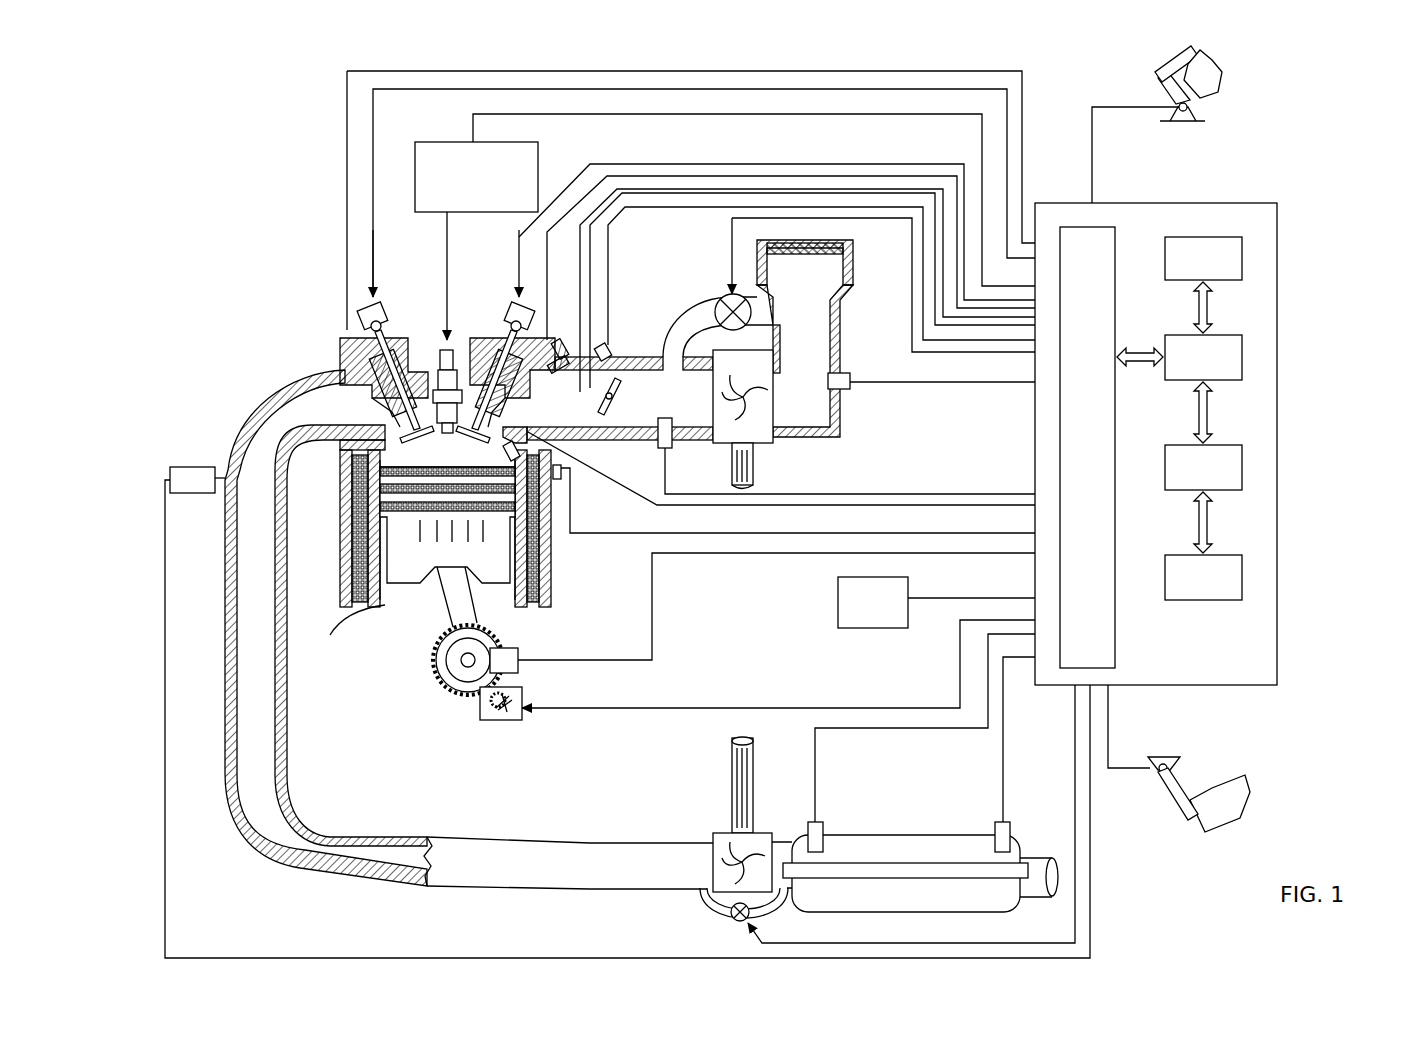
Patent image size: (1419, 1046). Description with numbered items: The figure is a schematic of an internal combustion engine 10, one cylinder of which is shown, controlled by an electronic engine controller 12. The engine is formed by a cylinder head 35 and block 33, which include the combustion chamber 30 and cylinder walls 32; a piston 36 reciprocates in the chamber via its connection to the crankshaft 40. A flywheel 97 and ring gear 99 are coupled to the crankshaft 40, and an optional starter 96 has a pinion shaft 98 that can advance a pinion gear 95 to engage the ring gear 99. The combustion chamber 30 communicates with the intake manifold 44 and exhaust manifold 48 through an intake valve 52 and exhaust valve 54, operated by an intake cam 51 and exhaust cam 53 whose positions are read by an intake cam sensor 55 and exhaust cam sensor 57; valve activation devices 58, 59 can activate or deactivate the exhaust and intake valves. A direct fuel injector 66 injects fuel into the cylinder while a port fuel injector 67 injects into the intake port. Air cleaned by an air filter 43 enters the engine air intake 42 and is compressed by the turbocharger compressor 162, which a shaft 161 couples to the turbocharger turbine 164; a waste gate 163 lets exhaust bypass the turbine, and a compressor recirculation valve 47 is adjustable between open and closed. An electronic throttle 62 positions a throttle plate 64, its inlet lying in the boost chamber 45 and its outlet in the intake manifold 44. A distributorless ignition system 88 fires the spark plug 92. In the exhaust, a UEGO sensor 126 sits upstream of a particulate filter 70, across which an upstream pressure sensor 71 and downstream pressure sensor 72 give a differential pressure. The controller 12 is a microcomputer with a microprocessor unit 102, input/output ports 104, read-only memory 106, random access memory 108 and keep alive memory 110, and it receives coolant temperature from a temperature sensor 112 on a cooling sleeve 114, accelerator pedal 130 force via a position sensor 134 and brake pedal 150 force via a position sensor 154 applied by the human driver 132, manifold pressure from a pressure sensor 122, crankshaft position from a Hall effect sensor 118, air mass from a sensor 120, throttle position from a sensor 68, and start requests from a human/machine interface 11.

The internal combustion engine 10 is at (272, 290).
The human/machine interface 11 is at (873, 602).
The electronic engine controller 12 is at (1206, 427).
The combustion chamber 30 is at (360, 540).
The cylinder walls 32 is at (385, 605).
The block 33 is at (338, 486).
The cylinder head 35 is at (340, 345).
The piston 36 is at (428, 555).
The crankshaft 40 is at (448, 690).
The engine air intake 42 is at (665, 262).
The air filter 43 is at (815, 256).
The intake manifold 44 is at (586, 414).
The boost chamber 45 is at (690, 414).
The compressor recirculation valve 47 is at (720, 298).
The exhaust manifold 48 is at (322, 422).
The intake cam 51 is at (516, 305).
The intake valve 52 is at (493, 410).
The exhaust cam 53 is at (369, 308).
The exhaust valve 54 is at (345, 385).
The intake cam sensor 55 is at (540, 338).
The exhaust cam sensor 57 is at (352, 325).
The valve activation device 58 is at (386, 322).
The valve activation device 59 is at (512, 330).
The electronic throttle 62 is at (612, 400).
The throttle plate 64 is at (613, 398).
The direct fuel injector 66 is at (520, 458).
The port fuel injector 67 is at (566, 348).
The throttle position sensor 68 is at (606, 360).
The particulate filter 70 is at (838, 835).
The upstream pressure sensor 71 is at (818, 822).
The downstream pressure sensor 72 is at (1003, 822).
The distributorless ignition system 88 is at (538, 156).
The spark plug 92 is at (455, 348).
The pinion gear 95 is at (505, 715).
The starter 96 is at (515, 715).
The flywheel 97 is at (440, 670).
The pinion shaft 98 is at (490, 708).
The ring gear 99 is at (457, 695).
The microprocessor unit 102 is at (1243, 358).
The input/output ports 104 is at (1118, 232).
The read-only memory 106 is at (1243, 258).
The random access memory 108 is at (1243, 468).
The keep alive memory 110 is at (1243, 578).
The temperature sensor 112 is at (561, 478).
The cooling sleeve 114 is at (552, 556).
The Hall effect sensor 118 is at (518, 650).
The air mass sensor 120 is at (850, 375).
The pressure sensor 122 is at (658, 446).
The Universal Exhaust Gas Oxygen sensor 126 is at (172, 468).
The accelerator pedal 130 is at (1160, 82).
The human driver 132 is at (1222, 72).
The position sensor 134 is at (1190, 110).
The brake pedal 150 is at (1190, 822).
The position sensor 154 is at (1160, 764).
The shaft 161 is at (732, 462).
The turbocharger compressor 162 is at (755, 445).
The waste gate 163 is at (735, 922).
The turbocharger turbine 164 is at (718, 832).